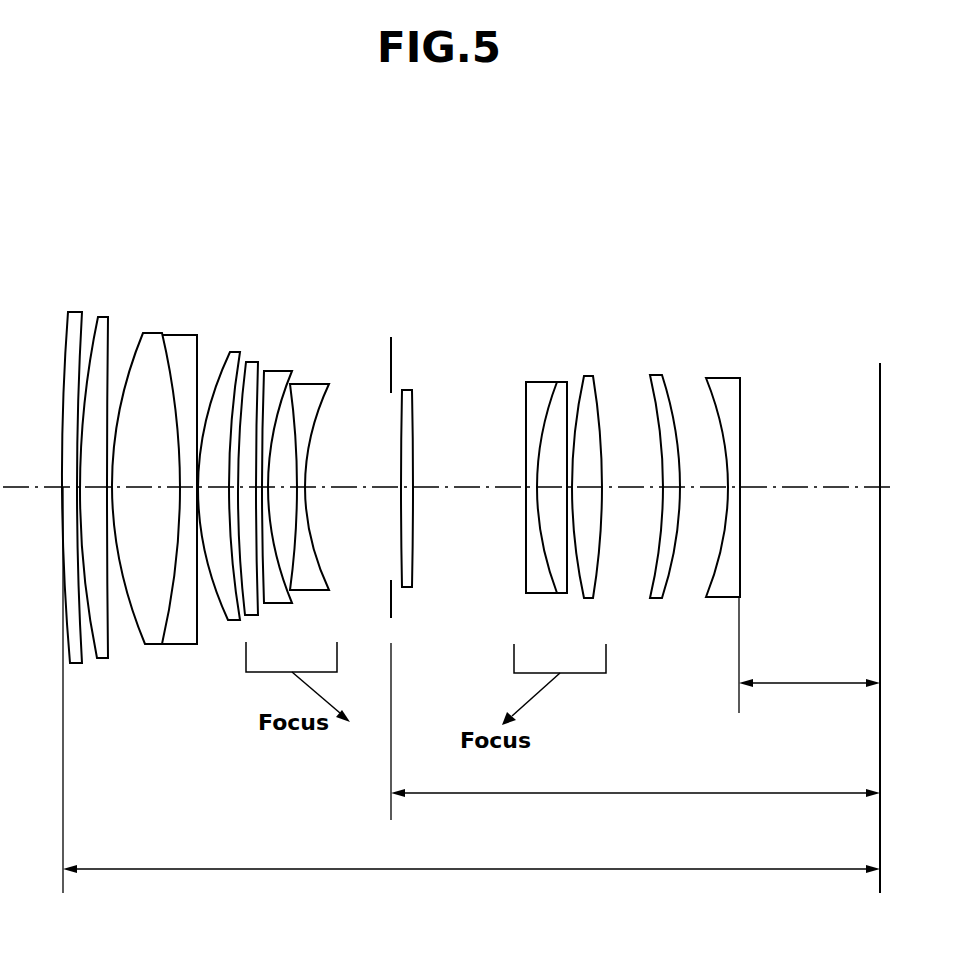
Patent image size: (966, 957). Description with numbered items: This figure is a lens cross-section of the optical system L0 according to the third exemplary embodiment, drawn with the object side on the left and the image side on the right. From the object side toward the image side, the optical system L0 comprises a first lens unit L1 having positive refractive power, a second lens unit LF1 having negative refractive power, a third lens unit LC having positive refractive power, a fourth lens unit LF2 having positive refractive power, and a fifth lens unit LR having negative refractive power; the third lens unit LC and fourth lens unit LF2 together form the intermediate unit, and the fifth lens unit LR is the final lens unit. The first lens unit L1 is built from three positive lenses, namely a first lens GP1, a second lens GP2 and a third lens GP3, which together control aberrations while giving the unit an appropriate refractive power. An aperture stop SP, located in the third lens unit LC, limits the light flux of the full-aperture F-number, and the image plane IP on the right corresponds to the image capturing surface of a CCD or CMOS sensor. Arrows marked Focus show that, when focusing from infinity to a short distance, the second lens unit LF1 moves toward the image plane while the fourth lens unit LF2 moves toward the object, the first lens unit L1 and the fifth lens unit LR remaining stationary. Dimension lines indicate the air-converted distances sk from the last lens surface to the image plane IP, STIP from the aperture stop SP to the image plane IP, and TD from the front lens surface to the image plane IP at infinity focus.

The optical system L0 is at (754, 155).
The first lens unit L1 is at (243, 215).
The first lens GP1 is at (77, 312).
The second lens GP2 is at (102, 318).
The third lens GP3 is at (155, 337).
The second lens unit LF1 is at (338, 215).
The third lens unit LC is at (417, 217).
The aperture stop SP is at (395, 347).
The fourth lens unit LF2 is at (608, 217).
The fifth lens unit LR is at (753, 217).
The image plane IP is at (883, 398).
The back focus distance sk is at (809, 655).
The stop-to-image-plane distance STIP is at (635, 734).
The total lens length TD is at (471, 694).